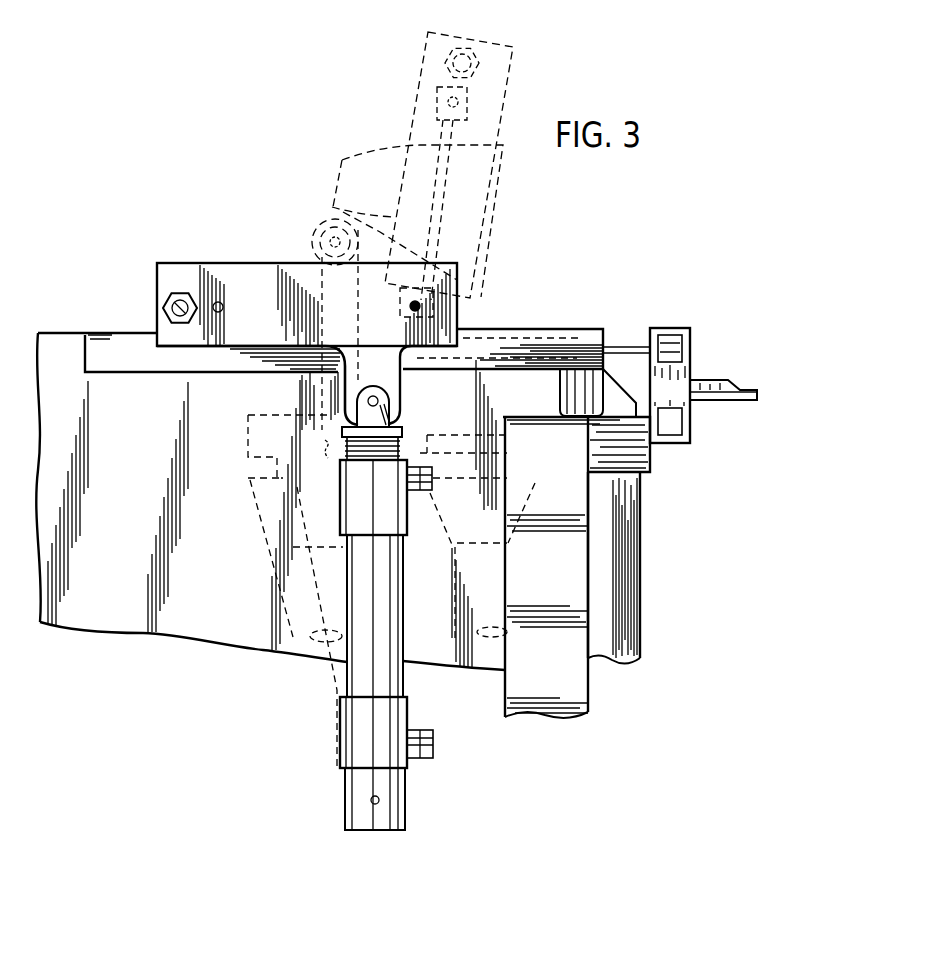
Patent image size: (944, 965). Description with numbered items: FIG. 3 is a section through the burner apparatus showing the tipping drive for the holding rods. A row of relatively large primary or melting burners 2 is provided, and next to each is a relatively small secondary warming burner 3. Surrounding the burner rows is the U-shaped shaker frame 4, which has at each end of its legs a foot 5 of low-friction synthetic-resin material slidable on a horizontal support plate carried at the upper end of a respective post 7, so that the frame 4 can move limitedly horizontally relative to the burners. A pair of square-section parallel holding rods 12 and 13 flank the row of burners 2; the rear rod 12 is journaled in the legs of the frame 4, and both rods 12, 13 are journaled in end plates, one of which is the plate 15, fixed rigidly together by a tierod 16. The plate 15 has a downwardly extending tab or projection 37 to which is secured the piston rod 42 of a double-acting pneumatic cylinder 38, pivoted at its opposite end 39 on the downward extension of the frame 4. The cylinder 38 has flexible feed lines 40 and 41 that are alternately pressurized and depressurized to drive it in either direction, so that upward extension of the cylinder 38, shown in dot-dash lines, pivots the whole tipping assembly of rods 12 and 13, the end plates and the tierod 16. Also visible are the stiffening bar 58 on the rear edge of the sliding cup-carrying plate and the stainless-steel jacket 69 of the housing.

The primary melting burner 2 is at (277, 513).
The secondary warming burner 3 is at (527, 497).
The shaker frame 4 is at (558, 335).
The foot 5 is at (570, 400).
The post 7 is at (567, 677).
The holding rod 12 is at (420, 306).
The holding rod 13 is at (218, 302).
The plate 15 is at (278, 280).
The tierod 16 is at (163, 303).
The tab or projection 37 is at (398, 378).
The double-acting pneumatic cylinder 38 is at (378, 657).
The pivot end 39 is at (371, 800).
The flexible feed line 40 is at (423, 752).
The flexible feed line 41 is at (417, 490).
The piston rod 42 is at (382, 418).
The stiffening bar 58 is at (672, 330).
The stainless-steel jacket 69 is at (107, 615).